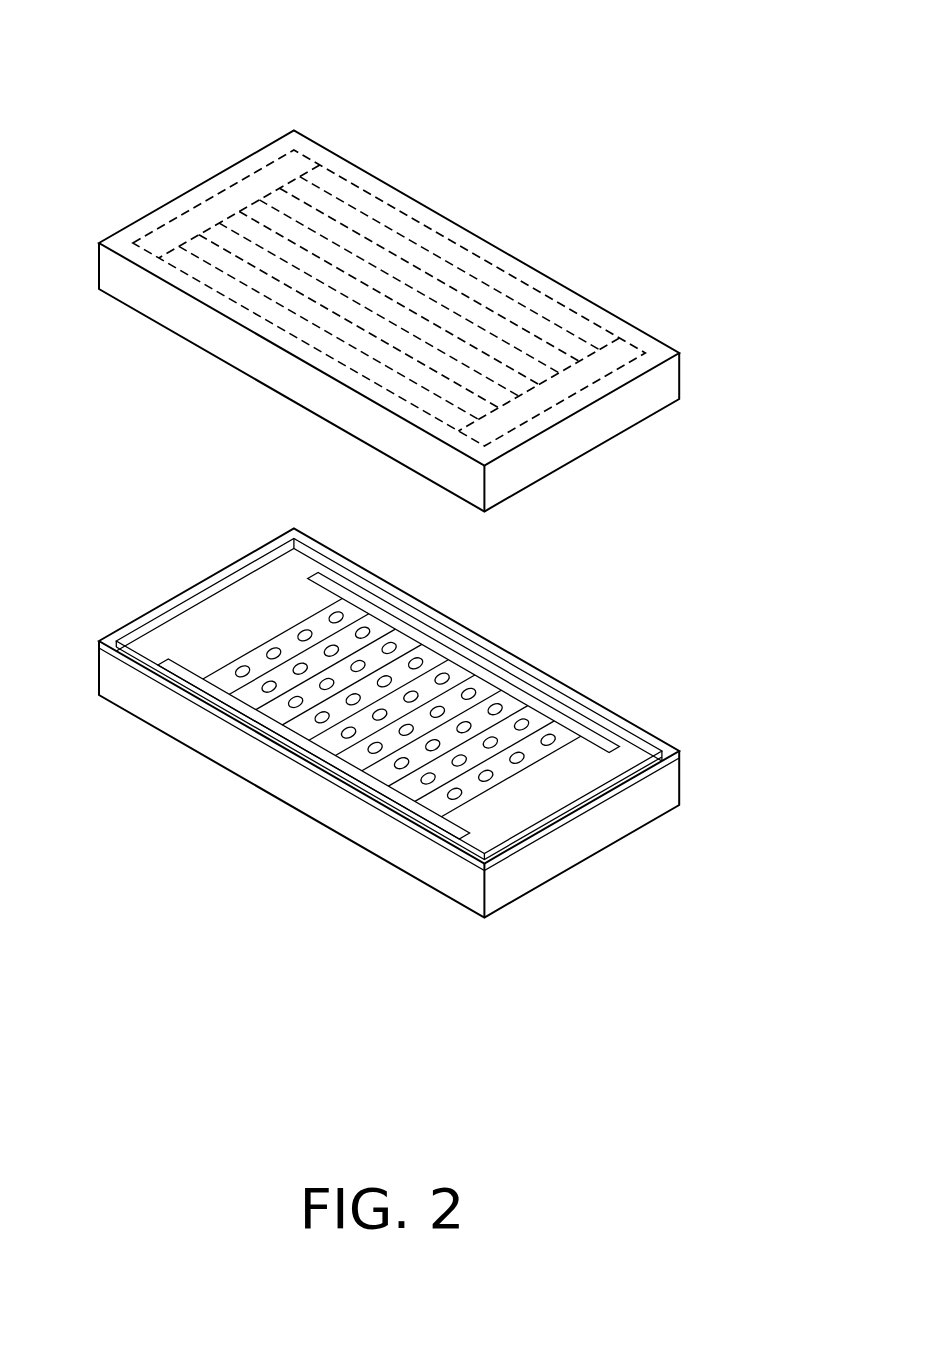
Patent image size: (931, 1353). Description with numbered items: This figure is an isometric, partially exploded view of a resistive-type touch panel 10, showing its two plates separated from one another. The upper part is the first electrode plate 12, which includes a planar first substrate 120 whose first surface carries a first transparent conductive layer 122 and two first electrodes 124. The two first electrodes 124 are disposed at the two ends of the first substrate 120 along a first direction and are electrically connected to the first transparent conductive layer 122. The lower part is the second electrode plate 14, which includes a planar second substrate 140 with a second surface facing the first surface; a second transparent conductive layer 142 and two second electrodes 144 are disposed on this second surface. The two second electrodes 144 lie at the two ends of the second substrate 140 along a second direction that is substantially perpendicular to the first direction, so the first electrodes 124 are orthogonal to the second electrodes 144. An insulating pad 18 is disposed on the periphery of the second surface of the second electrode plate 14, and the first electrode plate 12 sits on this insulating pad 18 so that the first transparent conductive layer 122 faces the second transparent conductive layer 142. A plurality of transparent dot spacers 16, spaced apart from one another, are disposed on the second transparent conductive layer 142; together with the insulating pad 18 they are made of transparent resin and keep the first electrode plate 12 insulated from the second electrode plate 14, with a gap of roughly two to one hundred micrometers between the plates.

The touch panel 10 is at (303, 66).
The first electrode plate 12 is at (438, 316).
The first substrate 120 is at (663, 380).
The first transparent conductive layer 122 is at (400, 250).
The first electrodes 124 is at (227, 200).
The second electrode plate 14 is at (389, 737).
The second substrate 140 is at (350, 825).
The second transparent conductive layer 142 is at (270, 638).
The second electrodes 144 is at (438, 643).
The transparent dot spacers 16 is at (543, 733).
The insulating pad 18 is at (273, 747).